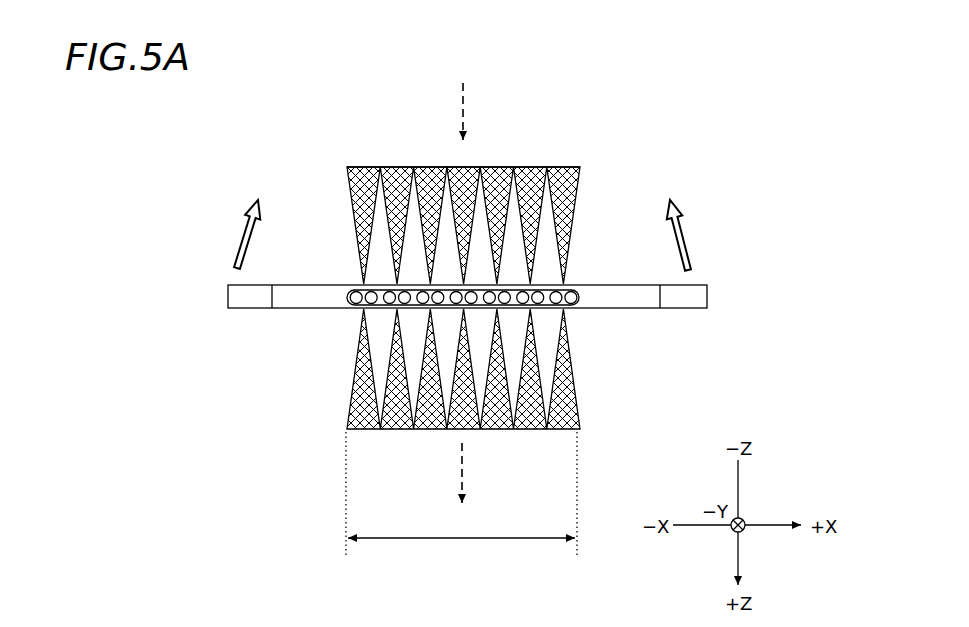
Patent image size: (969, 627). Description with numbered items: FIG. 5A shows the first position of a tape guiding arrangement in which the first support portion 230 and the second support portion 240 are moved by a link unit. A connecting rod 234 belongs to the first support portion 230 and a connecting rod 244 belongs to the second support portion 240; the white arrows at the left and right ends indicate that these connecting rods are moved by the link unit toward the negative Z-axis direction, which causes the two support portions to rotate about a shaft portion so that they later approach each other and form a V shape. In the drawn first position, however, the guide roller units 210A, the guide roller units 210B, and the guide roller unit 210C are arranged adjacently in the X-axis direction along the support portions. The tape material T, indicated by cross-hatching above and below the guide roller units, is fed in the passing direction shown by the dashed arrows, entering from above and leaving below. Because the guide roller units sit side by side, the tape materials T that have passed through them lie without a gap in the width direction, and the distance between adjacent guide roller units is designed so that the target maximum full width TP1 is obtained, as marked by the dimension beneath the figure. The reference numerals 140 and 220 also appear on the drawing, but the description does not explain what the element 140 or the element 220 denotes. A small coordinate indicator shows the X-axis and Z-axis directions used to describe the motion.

The ultrasonic processing device 140 is at (317, 124).
The composite sheet 220 is at (652, 191).
The first support portion 230 is at (298, 285).
The second support portion 240 is at (620, 285).
The connecting rod 234 is at (228, 296).
The connecting rod 244 is at (707, 297).
The guide roller units 210A is at (352, 312).
The guide roller units 210B is at (574, 312).
The guide roller unit 210C is at (463, 362).
The tape material T is at (366, 166).
The full width TP1 is at (461, 502).